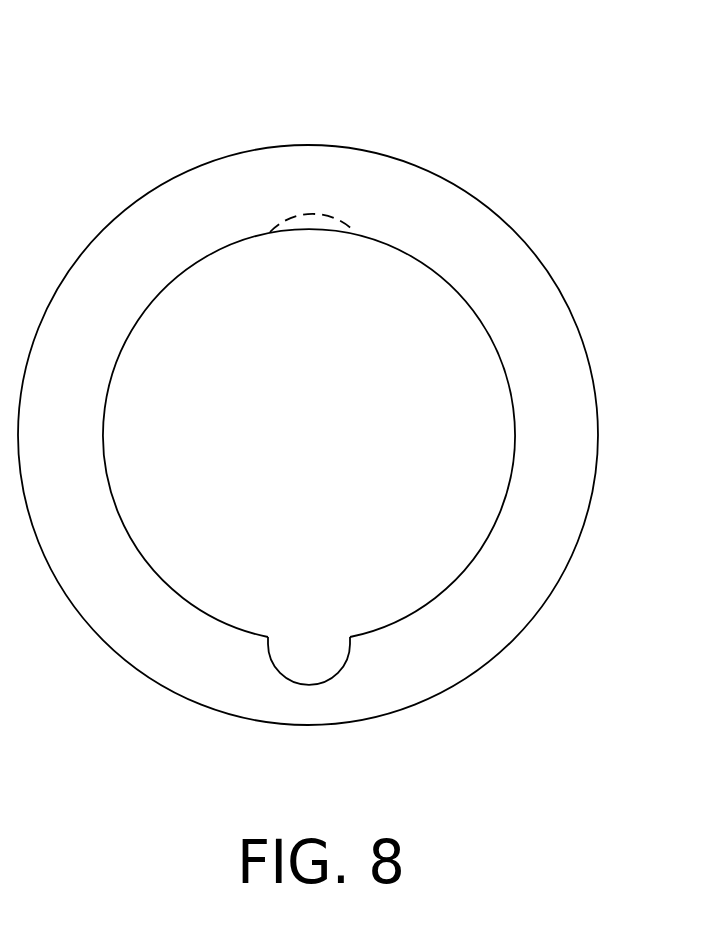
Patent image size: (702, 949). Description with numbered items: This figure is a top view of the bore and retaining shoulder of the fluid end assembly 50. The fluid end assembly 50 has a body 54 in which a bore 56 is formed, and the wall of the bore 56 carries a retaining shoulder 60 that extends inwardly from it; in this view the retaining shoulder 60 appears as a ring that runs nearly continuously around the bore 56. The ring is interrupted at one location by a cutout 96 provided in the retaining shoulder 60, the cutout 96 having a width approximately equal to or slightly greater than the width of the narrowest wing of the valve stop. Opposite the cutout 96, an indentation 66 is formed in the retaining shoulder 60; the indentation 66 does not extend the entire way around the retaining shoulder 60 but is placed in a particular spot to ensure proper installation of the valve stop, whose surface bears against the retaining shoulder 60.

The fluid end assembly 50 is at (256, 100).
The body 54 is at (538, 165).
The bore 56 is at (329, 446).
The retaining shoulder 60 is at (124, 345).
The indentation 66 is at (310, 233).
The cutout 96 is at (311, 650).